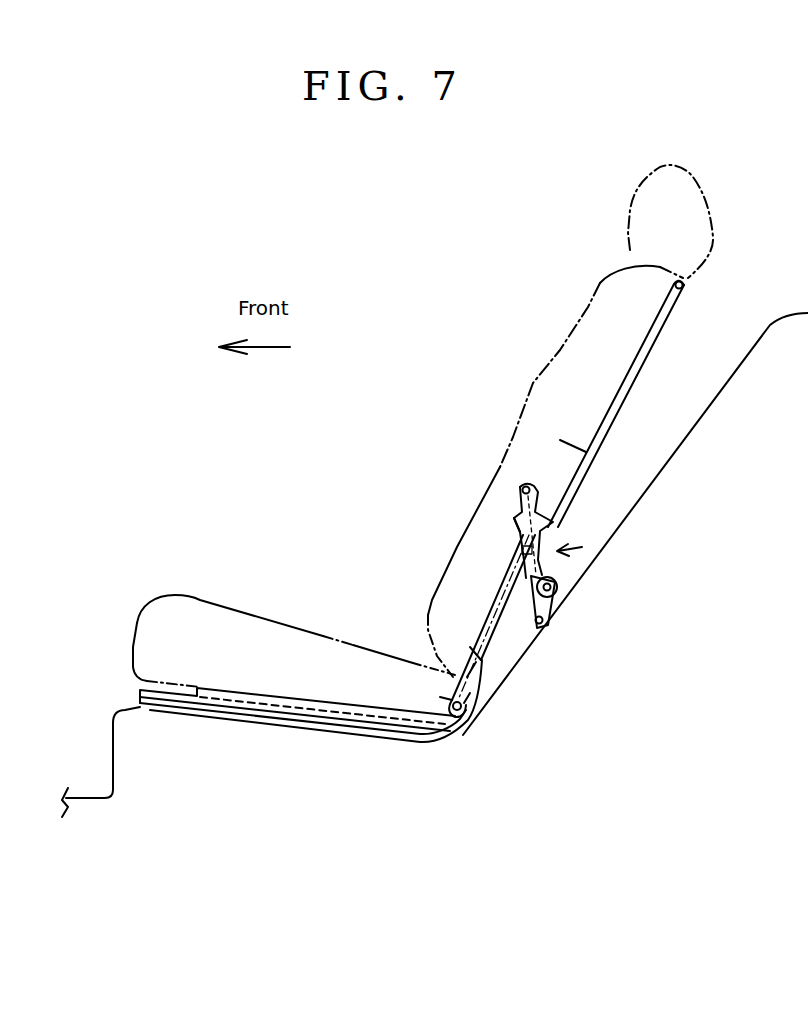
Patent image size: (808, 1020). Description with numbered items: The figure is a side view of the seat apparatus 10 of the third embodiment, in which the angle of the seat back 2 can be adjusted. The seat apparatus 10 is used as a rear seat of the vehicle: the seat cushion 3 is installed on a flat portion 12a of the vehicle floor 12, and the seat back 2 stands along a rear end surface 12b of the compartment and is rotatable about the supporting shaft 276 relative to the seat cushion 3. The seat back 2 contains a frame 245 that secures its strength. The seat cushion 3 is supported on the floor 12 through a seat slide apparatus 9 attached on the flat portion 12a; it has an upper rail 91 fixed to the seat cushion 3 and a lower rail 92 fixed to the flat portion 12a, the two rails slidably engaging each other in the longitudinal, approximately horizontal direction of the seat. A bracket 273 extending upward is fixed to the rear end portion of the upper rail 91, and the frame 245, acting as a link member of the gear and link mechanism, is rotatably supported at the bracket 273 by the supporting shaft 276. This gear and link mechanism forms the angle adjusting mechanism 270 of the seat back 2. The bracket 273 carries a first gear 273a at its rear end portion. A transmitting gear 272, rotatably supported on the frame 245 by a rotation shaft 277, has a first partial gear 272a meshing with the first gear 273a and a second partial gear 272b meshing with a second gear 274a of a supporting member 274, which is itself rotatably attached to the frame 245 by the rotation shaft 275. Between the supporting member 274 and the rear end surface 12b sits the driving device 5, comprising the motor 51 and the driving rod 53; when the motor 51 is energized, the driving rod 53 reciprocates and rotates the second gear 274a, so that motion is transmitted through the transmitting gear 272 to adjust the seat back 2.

The seat back 2 is at (537, 407).
The seat cushion 3 is at (222, 615).
The driving device 5 is at (563, 616).
The seat slide apparatus 9 is at (303, 755).
The seat apparatus 10 is at (357, 458).
The vehicle floor 12 is at (88, 797).
The flat portion 12a is at (283, 722).
The rear end surface 12b is at (635, 510).
The motor 51 is at (557, 575).
The driving rod 53 is at (518, 510).
The upper rail 91 is at (228, 702).
The lower rail 92 is at (180, 700).
The frame 245 is at (586, 453).
The angle adjusting mechanism 270 is at (563, 540).
The transmitting gear 272 is at (500, 580).
The first partial gear 272a is at (470, 692).
The second partial gear 272b is at (558, 520).
The bracket 273 is at (440, 697).
The first gear 273a is at (467, 677).
The supporting member 274 is at (578, 466).
The second gear 274a is at (520, 490).
The rotation shaft 275 is at (567, 503).
The supporting shaft 276 is at (463, 708).
The rotation shaft 277 is at (472, 647).